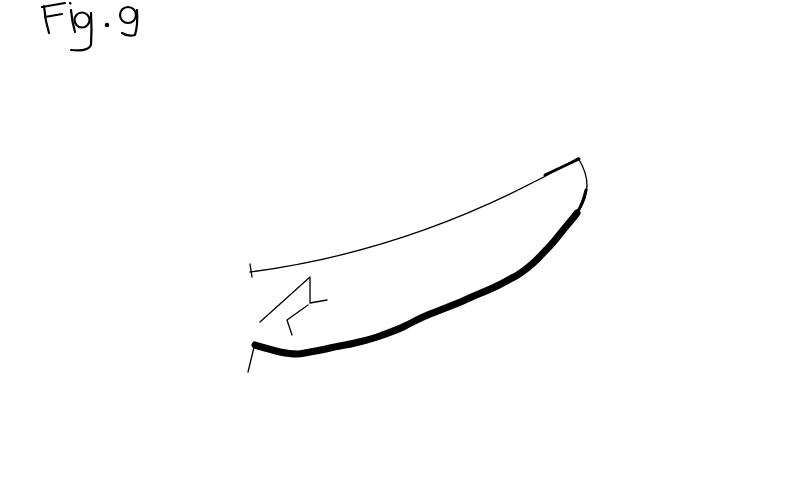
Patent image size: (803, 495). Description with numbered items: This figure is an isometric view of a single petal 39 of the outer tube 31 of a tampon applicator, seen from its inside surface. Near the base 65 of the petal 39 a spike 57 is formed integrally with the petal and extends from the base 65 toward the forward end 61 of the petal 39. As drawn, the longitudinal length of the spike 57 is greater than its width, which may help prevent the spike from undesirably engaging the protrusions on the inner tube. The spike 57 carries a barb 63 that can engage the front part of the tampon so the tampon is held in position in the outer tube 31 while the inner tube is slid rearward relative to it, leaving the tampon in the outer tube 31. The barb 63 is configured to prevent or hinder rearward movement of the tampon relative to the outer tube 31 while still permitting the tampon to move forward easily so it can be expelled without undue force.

The outer tube 31 is at (247, 363).
The petal 39 is at (503, 271).
The spike 57 is at (283, 290).
The forward end 61 is at (608, 178).
The barb 63 is at (324, 302).
The base 65 is at (266, 289).